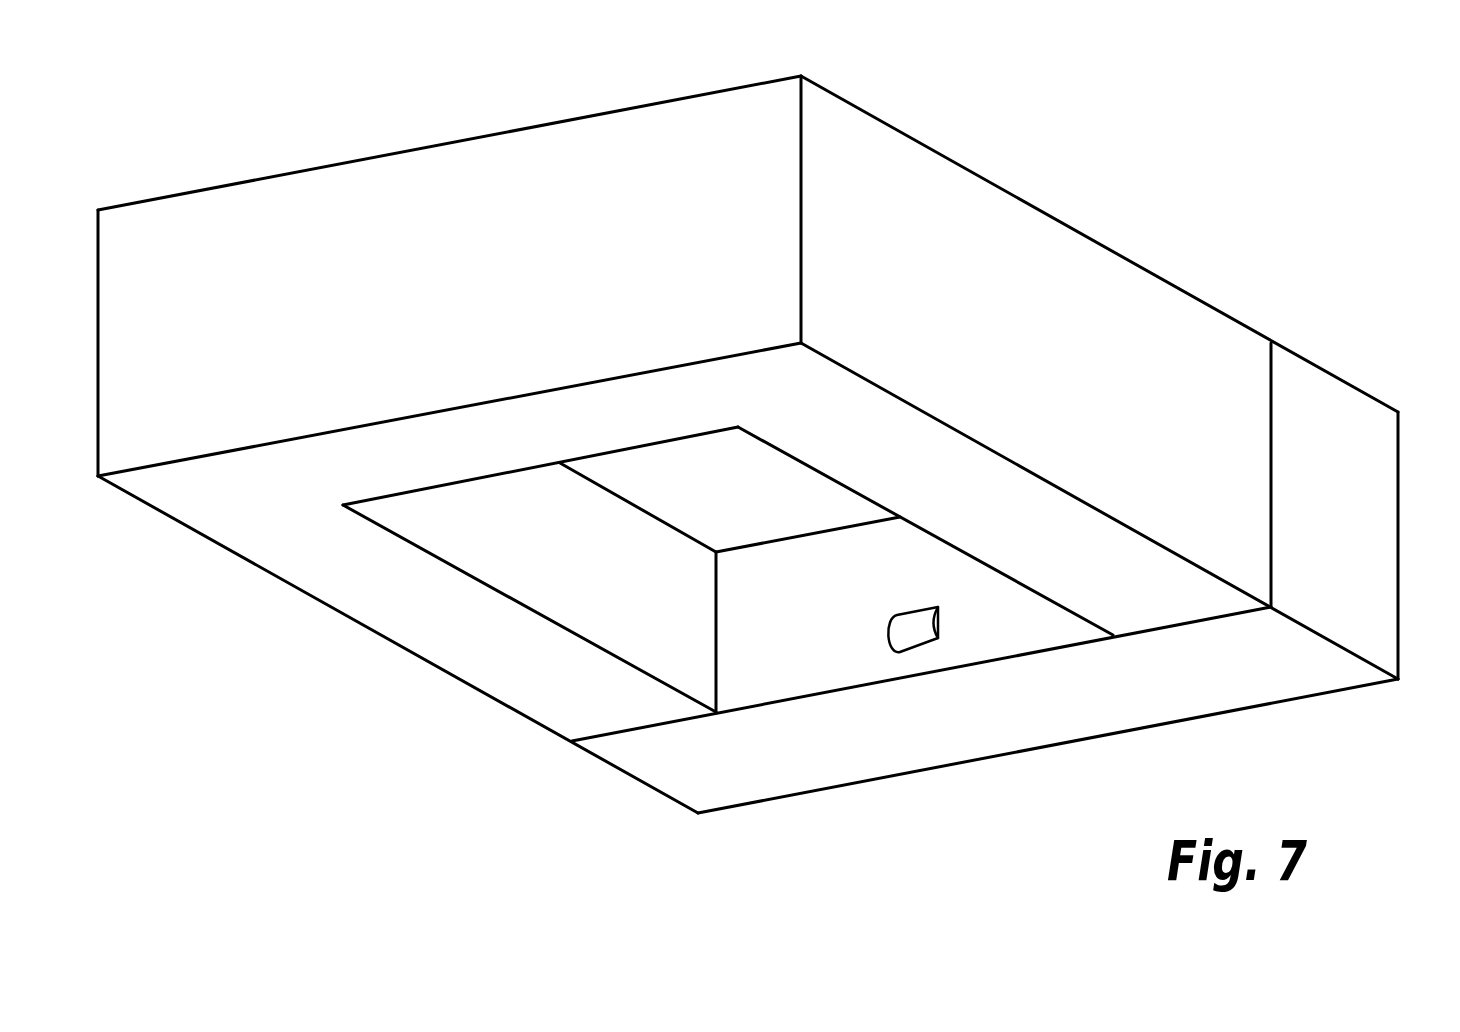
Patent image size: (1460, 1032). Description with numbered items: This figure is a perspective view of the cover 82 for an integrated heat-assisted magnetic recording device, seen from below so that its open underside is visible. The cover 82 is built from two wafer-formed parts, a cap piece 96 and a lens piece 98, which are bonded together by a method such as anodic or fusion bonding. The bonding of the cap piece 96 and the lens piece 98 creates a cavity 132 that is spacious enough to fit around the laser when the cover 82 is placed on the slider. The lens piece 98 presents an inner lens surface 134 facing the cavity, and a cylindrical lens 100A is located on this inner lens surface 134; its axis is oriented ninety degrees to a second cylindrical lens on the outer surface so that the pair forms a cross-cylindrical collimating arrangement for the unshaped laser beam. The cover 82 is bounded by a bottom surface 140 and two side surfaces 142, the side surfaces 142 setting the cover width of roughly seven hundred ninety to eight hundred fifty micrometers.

The cap piece 96 is at (771, 438).
The cover 82 is at (1020, 171).
The side surfaces 142 is at (771, 377).
The lens piece 98 is at (1403, 583).
The bottom surface 140 is at (1130, 585).
The inner lens surface 134 is at (1023, 640).
The cavity 132 is at (767, 645).
The cylindrical lens 100A is at (910, 635).